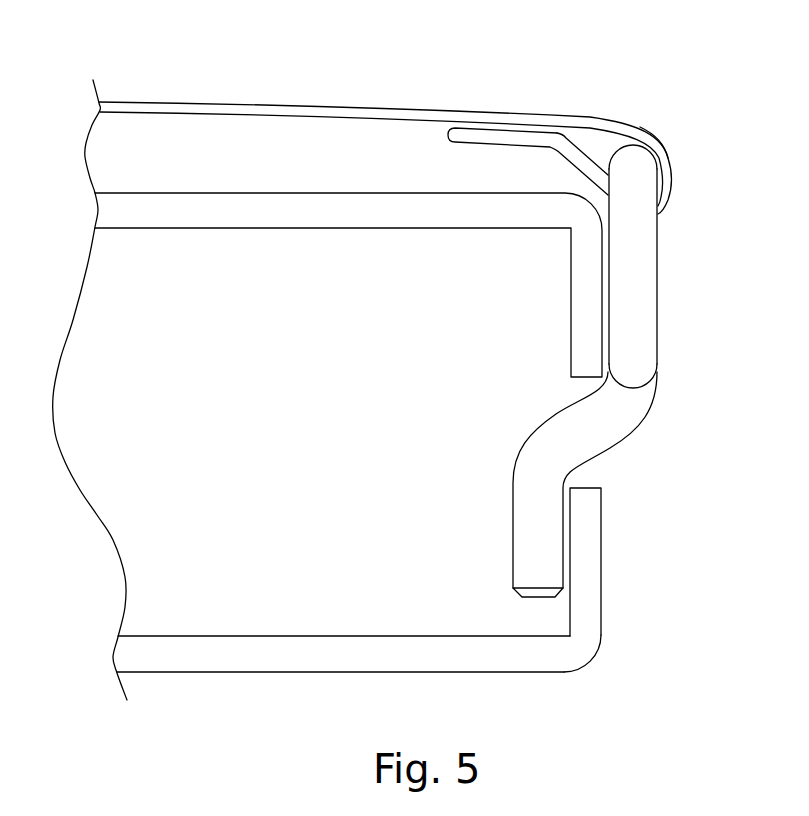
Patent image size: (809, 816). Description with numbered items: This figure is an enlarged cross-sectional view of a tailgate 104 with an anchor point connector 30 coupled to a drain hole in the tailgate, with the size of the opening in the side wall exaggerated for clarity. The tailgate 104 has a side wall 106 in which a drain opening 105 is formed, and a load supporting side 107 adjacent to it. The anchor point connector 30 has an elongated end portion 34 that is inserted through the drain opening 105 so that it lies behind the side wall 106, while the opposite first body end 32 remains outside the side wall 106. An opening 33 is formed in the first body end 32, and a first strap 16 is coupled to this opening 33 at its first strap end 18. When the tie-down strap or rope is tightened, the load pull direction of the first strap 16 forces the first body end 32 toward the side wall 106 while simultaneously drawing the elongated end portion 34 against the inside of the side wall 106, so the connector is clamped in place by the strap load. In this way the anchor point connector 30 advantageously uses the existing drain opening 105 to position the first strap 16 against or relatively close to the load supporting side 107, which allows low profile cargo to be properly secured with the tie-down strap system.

The first strap 16 is at (325, 105).
The first strap end 18 is at (650, 130).
The first body end 32 is at (657, 177).
The opening 33 is at (657, 283).
The anchor point connector 30 is at (657, 375).
The elongated end portion 34 is at (513, 532).
The tailgate 104 is at (328, 668).
The drain opening 105 is at (598, 477).
The side wall 106 is at (600, 615).
The load supporting side 107 is at (238, 193).